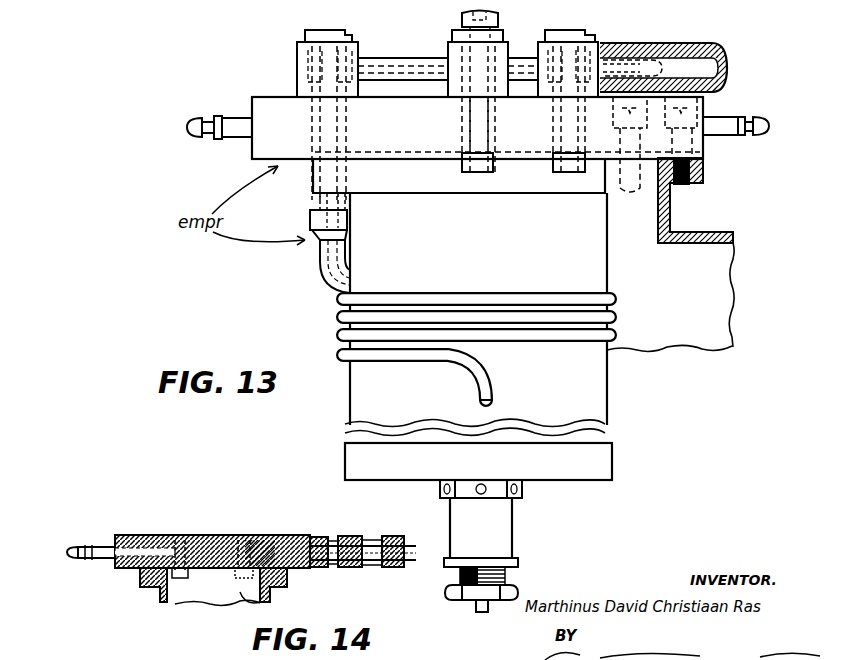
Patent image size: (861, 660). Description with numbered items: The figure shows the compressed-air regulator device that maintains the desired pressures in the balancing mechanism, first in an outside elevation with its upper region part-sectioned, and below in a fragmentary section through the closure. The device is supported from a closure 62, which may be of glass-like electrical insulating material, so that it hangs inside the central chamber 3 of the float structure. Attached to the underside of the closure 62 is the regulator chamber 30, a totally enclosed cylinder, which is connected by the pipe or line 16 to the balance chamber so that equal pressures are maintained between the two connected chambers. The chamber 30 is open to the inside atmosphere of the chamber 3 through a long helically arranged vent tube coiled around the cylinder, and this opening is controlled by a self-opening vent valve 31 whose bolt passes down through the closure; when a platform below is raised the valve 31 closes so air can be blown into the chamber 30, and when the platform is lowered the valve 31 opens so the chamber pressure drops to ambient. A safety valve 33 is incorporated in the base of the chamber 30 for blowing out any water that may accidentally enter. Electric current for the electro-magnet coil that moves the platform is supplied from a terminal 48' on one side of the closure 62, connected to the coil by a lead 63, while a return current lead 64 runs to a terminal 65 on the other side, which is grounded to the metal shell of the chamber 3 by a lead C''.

In FIG. 13, the chamber 3 is at (679, 329).
In FIG. 13, the pipe or line 16 is at (685, 63).
In FIG. 13, the regulator chamber 30 is at (500, 345).
In FIG. 14, the regulator chamber 30 is at (250, 591).
In FIG. 13, the vent valve 31 is at (478, 65).
In FIG. 13, the safety valve 33 is at (498, 516).
In FIG. 13, the terminal 48' is at (214, 142).
In FIG. 14, the terminal 48' is at (92, 579).
In FIG. 13, the closure 62 is at (262, 108).
In FIG. 14, the closure 62 is at (278, 540).
In FIG. 14, the lead 63 is at (183, 578).
In FIG. 14, the return current lead 64 is at (243, 578).
In FIG. 13, the terminal 65 is at (723, 122).
In FIG. 14, the terminal 65 is at (331, 562).
In FIG. 14, the lead C'' is at (411, 575).